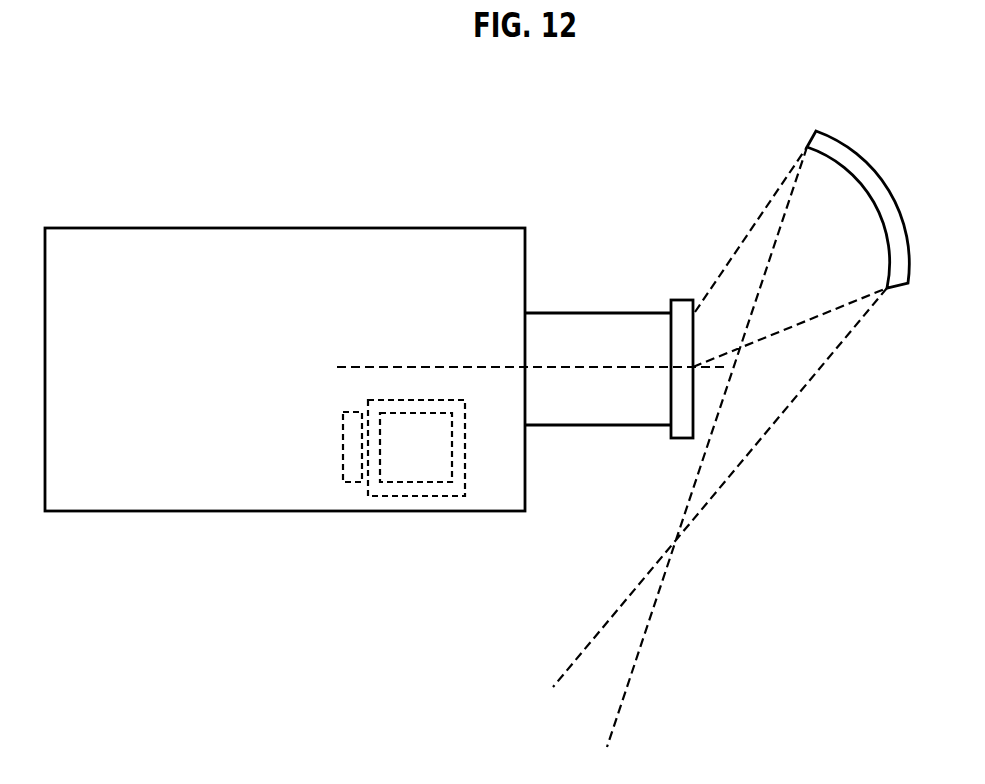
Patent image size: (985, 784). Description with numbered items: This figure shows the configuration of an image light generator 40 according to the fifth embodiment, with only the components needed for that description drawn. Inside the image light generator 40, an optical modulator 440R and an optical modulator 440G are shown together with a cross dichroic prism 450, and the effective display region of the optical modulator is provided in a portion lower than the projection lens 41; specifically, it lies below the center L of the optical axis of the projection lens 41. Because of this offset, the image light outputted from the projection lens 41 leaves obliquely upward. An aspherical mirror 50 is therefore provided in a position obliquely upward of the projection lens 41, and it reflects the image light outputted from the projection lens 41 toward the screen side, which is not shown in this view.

The image light generator 40 is at (372, 229).
The projection lens 41 is at (572, 328).
The aspherical mirror 50 is at (868, 188).
The center of an optical axis L is at (385, 361).
The optical modulator 440G is at (348, 452).
The optical modulator 440R is at (413, 472).
The cross dichroic prism 450 is at (452, 497).